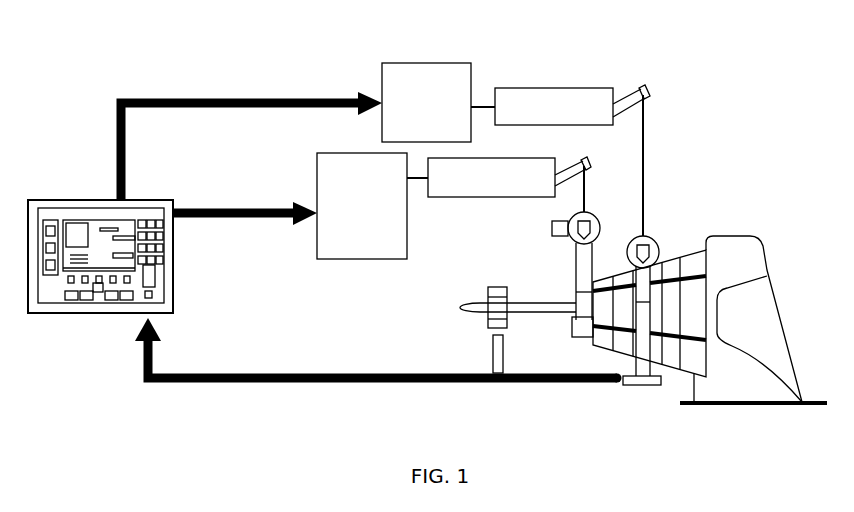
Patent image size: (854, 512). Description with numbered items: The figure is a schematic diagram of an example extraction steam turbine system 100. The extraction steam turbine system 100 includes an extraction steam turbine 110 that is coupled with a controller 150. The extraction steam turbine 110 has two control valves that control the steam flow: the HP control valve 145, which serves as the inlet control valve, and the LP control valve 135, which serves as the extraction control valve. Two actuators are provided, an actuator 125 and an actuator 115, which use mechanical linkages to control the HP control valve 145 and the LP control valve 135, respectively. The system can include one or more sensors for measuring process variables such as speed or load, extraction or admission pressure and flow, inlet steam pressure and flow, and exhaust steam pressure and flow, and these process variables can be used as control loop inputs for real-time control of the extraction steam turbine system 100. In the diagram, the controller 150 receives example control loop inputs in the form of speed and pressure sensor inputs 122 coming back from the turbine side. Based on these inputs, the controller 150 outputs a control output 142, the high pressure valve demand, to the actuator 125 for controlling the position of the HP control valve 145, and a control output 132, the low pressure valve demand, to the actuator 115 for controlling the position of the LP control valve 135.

The extraction steam turbine system 100 is at (147, 47).
The extraction steam turbine 110 is at (765, 262).
The actuator 115 is at (406, 63).
The speed and pressure sensor inputs 122 is at (237, 414).
The actuator 125 is at (340, 260).
The control output 132 is at (188, 97).
The LP control valve 135 is at (560, 88).
The control output 142 is at (225, 205).
The HP control valve 145 is at (514, 247).
The controller 150 is at (95, 315).